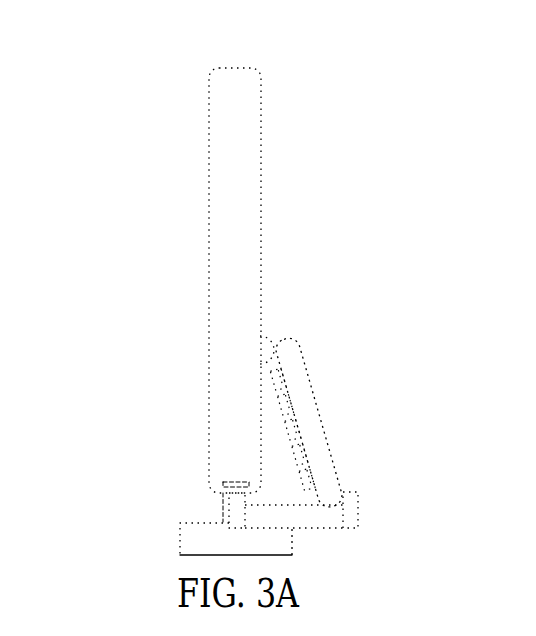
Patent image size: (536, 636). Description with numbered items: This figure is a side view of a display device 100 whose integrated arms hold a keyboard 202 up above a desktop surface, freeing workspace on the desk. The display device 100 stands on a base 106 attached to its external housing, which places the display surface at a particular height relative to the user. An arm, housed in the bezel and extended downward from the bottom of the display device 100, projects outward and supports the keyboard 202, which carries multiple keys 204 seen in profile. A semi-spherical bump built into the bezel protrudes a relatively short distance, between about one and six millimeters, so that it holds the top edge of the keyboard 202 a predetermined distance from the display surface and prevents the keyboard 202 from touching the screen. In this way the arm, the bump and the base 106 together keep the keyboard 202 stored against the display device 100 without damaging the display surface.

The display device 100 is at (165, 95).
The keyboard 202 is at (322, 416).
The keys 204 is at (273, 437).
The base 106 is at (180, 535).